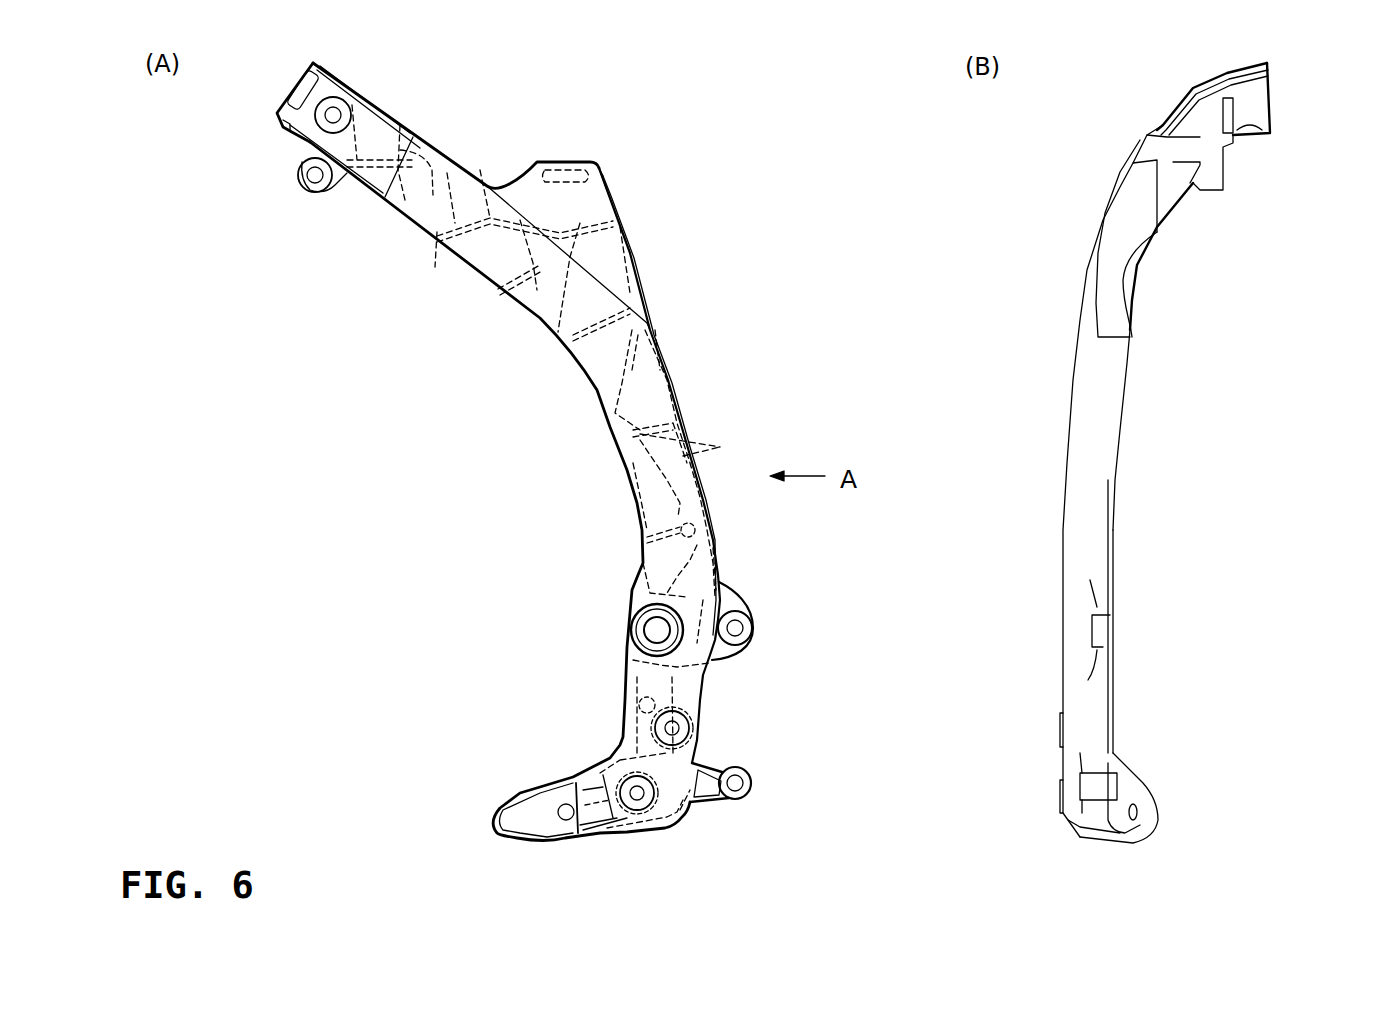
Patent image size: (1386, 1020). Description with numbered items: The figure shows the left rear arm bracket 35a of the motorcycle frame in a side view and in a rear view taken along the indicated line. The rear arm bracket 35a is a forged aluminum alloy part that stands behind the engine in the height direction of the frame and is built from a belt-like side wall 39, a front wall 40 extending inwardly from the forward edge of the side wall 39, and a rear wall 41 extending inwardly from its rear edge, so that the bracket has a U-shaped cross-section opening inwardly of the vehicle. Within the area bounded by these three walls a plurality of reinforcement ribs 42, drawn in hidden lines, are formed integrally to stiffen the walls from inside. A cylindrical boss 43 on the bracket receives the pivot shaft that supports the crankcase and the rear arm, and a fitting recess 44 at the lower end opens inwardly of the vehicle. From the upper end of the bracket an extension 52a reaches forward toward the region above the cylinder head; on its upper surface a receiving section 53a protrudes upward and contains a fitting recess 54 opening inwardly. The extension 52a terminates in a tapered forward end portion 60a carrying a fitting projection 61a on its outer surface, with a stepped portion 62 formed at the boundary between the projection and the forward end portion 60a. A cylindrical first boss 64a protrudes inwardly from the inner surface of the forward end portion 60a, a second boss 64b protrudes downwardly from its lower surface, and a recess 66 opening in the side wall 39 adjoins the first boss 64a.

The rear arm bracket 35a is at (720, 572).
The side wall 39 is at (663, 512).
The front wall 40 is at (613, 430).
The rear wall 41 is at (673, 387).
The reinforcement ribs 42 is at (480, 222).
The cylindrical boss 43 is at (640, 631).
The fitting recess 44 is at (658, 828).
The extension 52a is at (477, 200).
The receiving section 53a is at (585, 183).
The fitting recess 54 is at (565, 172).
The forward end portion 60a is at (357, 82).
The fitting projection 61a is at (313, 72).
The stepped portion 62 is at (282, 122).
The first boss 64a is at (352, 120).
The second boss 64b is at (328, 180).
The recess 66 is at (305, 135).